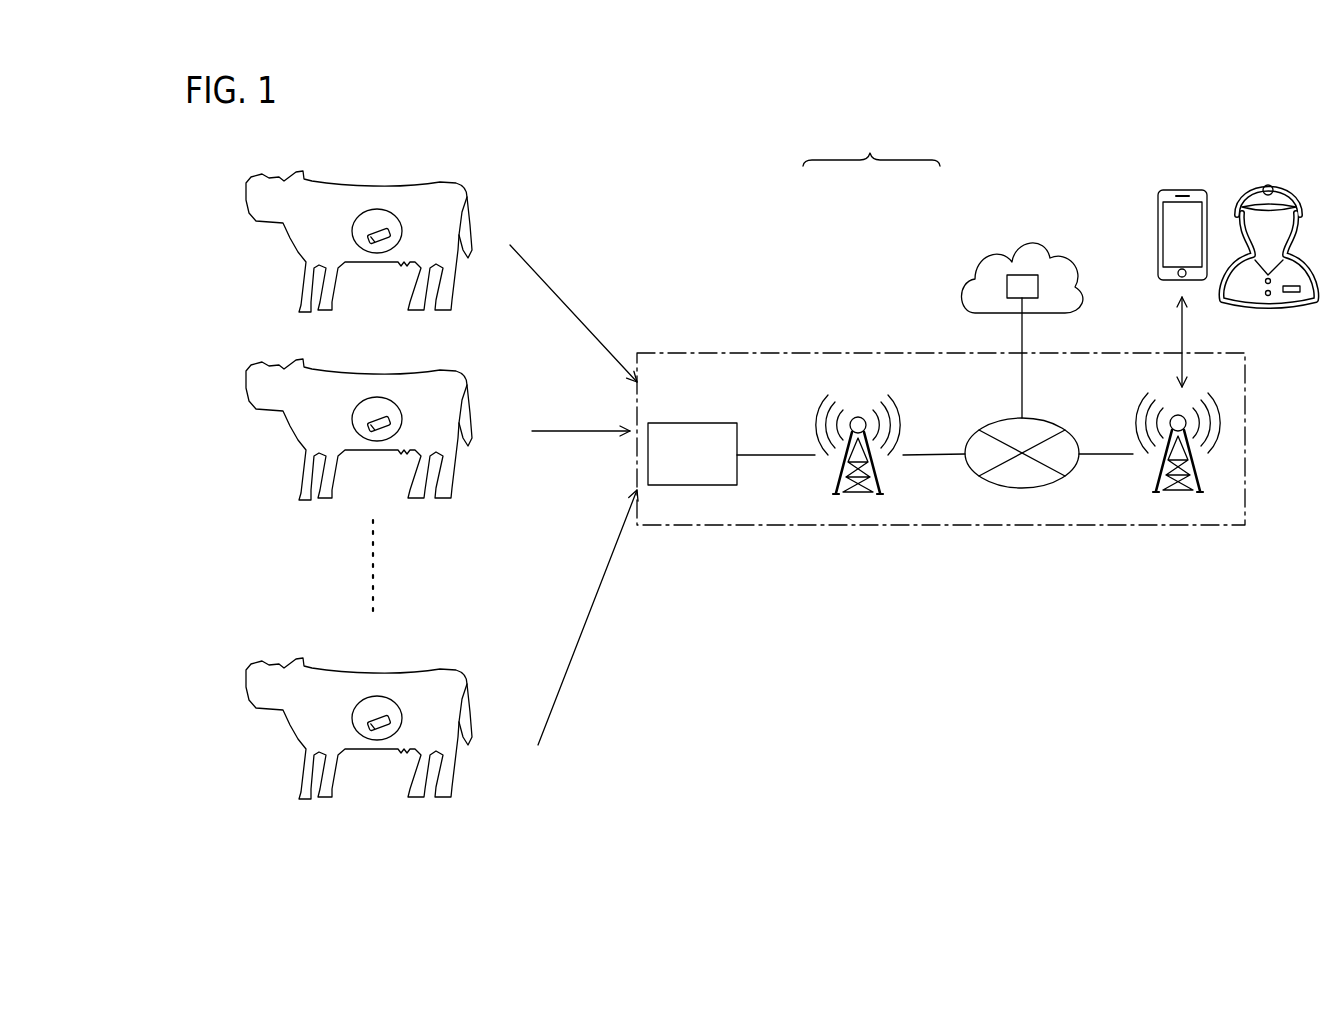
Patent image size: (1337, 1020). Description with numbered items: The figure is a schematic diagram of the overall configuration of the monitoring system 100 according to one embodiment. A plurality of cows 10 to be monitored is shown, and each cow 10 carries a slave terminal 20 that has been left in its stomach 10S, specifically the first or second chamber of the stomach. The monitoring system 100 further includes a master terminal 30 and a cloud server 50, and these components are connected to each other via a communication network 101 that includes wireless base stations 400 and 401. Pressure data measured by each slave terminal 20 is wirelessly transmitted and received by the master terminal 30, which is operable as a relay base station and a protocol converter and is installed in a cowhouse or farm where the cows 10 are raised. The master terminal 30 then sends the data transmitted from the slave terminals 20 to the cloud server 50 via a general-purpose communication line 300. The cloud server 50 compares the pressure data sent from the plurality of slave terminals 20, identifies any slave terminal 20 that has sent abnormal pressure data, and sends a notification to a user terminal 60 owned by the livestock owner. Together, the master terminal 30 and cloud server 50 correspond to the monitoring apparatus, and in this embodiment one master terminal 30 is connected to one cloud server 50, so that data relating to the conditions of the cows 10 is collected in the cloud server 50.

The cow 10 is at (350, 182).
The stomach 10S is at (383, 210).
The slave terminal 20 is at (391, 234).
The master terminal 30 is at (700, 423).
The cloud server 50 is at (1005, 285).
The user terminal 60 is at (1183, 190).
The monitoring system 100 is at (871, 147).
The communication network 101 is at (848, 352).
The general-purpose communication line 300 is at (1030, 488).
The wireless base station 400 is at (858, 495).
The wireless base station 401 is at (1183, 495).